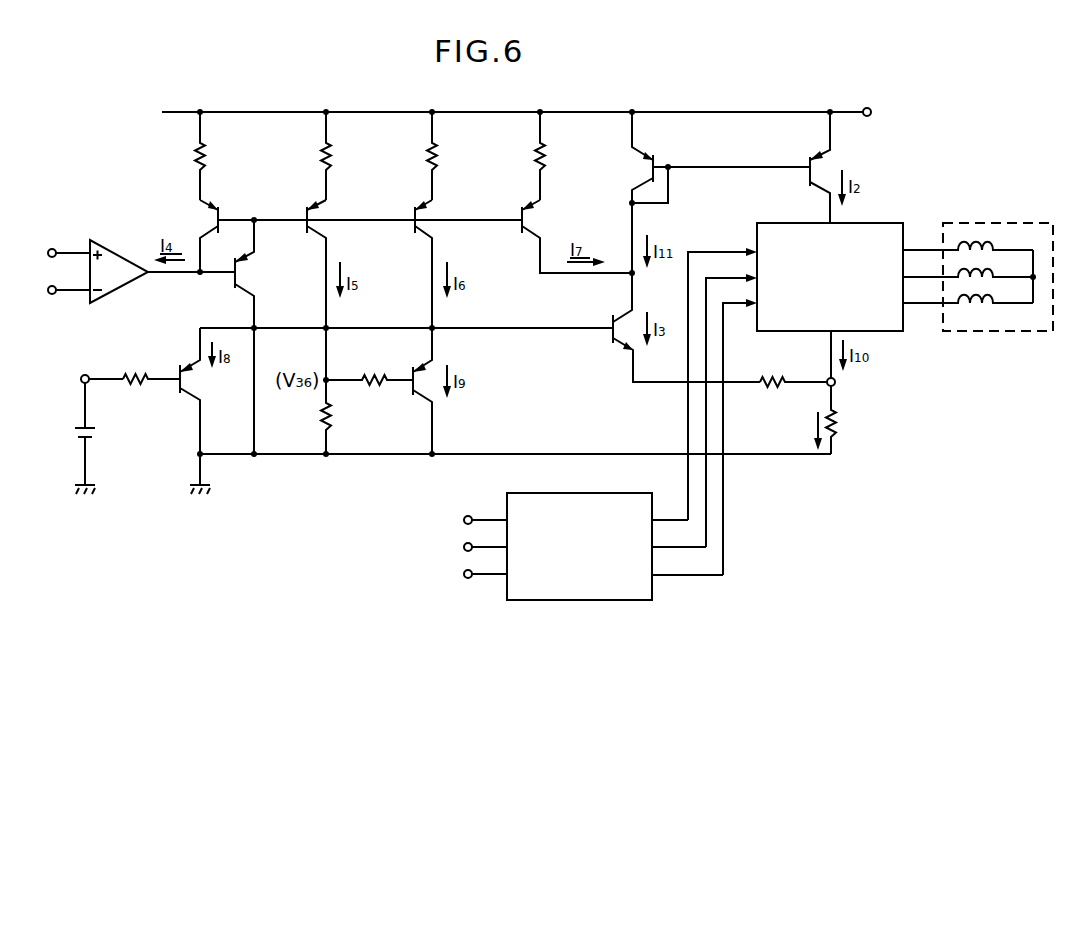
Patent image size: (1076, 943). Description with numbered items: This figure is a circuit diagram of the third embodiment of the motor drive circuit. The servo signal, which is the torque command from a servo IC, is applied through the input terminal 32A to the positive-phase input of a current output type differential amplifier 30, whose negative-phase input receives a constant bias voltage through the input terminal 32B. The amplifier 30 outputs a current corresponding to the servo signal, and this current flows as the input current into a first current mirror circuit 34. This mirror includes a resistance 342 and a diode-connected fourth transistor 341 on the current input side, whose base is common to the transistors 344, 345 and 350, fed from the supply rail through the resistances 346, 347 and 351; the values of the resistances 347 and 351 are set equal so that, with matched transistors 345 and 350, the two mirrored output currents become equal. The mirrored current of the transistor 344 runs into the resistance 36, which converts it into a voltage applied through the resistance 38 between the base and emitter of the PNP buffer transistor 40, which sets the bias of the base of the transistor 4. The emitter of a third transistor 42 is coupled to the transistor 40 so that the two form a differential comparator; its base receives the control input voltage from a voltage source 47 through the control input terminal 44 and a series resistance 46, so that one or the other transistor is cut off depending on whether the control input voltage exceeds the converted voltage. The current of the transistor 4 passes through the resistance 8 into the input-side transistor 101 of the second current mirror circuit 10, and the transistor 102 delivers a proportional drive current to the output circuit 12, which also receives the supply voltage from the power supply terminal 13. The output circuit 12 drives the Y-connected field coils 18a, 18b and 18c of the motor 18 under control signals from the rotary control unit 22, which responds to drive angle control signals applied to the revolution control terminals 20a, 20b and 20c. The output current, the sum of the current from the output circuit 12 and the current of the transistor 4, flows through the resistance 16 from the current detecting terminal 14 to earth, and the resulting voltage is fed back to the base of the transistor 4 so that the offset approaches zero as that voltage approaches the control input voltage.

The transistor 4 is at (610, 342).
The resistance 8 is at (766, 390).
The second current mirror circuit 10 is at (740, 162).
The output circuit 12 is at (790, 223).
The power supply terminal 13 is at (867, 108).
The current detecting terminal 14 is at (828, 379).
The resistance 16 is at (836, 420).
The motor 18 is at (978, 301).
The field coil 18a is at (991, 250).
The field coil 18b is at (991, 277).
The field coil 18c is at (991, 304).
The revolution control terminal 20a is at (468, 516).
The revolution control terminal 20b is at (478, 532).
The revolution control terminal 20c is at (468, 578).
The rotary control unit 22 is at (592, 600).
The current output type differential amplifier 30 is at (124, 288).
The input terminal 32A is at (55, 249).
The input terminal 32B is at (52, 294).
The first current mirror circuit 34 is at (290, 212).
The resistance 36 is at (320, 418).
The resistance 38 is at (372, 376).
The transistor 40 is at (412, 393).
The transistor 42 is at (179, 396).
The control input terminal 44 is at (83, 365).
The resistor 46 is at (133, 384).
The voltage source 47 is at (98, 434).
The transistor 101 is at (646, 171).
The transistor 102 is at (828, 150).
The transistor 341 is at (200, 236).
The resistance 342 is at (205, 153).
The transistor 344 is at (297, 245).
The transistor 345 is at (413, 233).
The resistor 346 is at (331, 153).
The resistance 347 is at (437, 153).
The transistor 350 is at (522, 233).
The resistance 351 is at (545, 155).